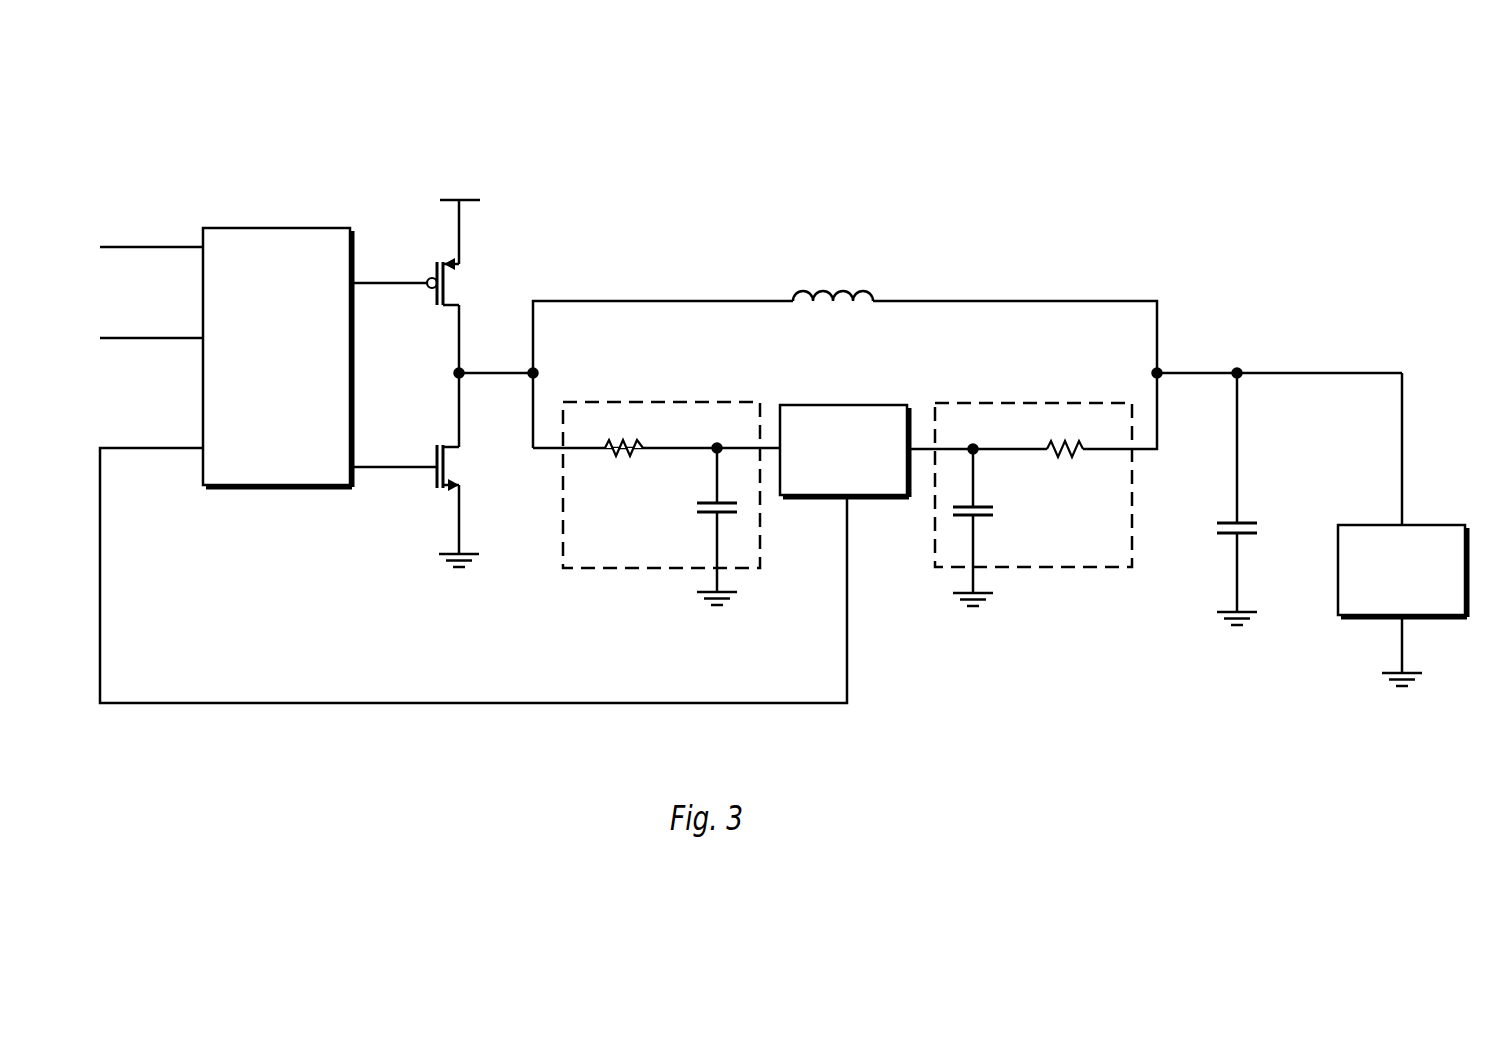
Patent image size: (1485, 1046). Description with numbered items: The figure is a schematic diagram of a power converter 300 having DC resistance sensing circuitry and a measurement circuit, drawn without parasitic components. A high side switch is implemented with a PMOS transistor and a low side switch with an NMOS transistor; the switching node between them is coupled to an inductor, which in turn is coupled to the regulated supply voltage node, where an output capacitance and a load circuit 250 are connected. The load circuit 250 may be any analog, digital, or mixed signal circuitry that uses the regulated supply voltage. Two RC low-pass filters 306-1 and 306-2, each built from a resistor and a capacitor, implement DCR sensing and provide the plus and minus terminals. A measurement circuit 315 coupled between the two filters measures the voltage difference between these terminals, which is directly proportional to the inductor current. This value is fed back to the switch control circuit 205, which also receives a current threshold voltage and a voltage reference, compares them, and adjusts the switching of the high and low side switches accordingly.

The power converter 300 is at (903, 128).
The switch control circuit 205 is at (260, 397).
The filter 306-1 is at (758, 379).
The filter 306-2 is at (1100, 379).
The measurement circuit 315 is at (860, 474).
The load circuit 250 is at (1443, 579).